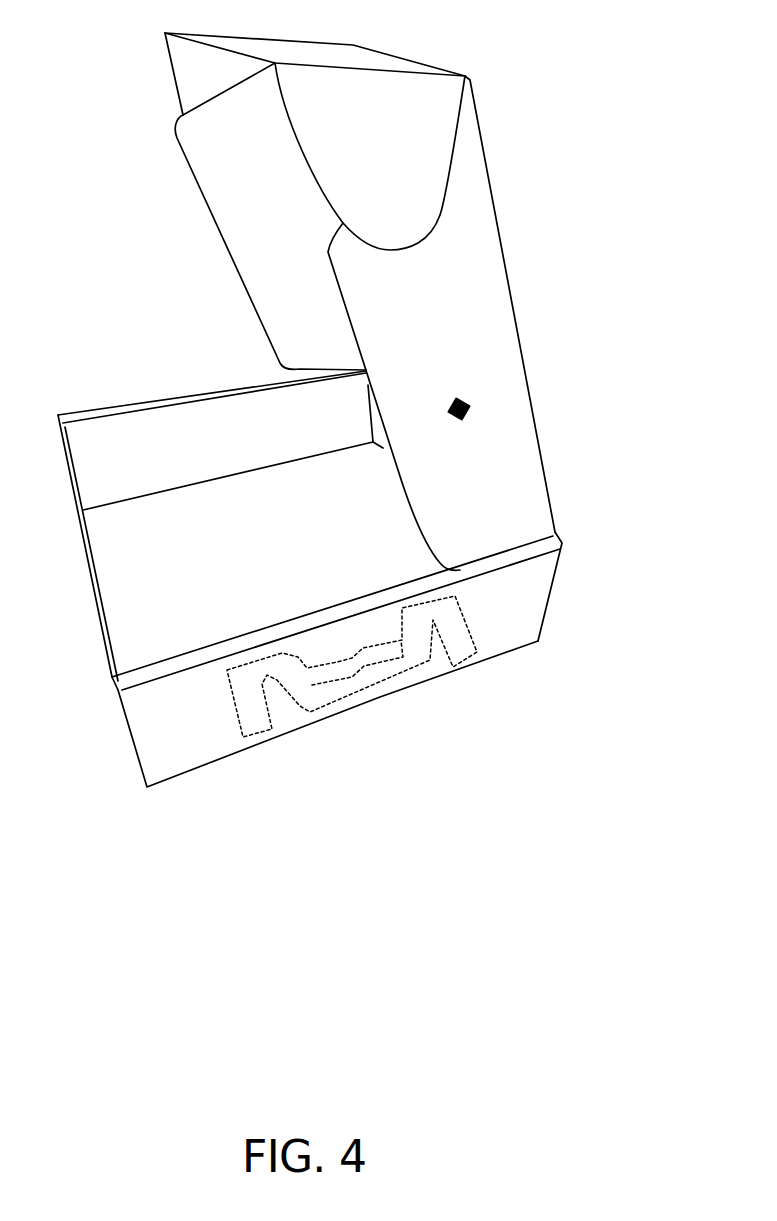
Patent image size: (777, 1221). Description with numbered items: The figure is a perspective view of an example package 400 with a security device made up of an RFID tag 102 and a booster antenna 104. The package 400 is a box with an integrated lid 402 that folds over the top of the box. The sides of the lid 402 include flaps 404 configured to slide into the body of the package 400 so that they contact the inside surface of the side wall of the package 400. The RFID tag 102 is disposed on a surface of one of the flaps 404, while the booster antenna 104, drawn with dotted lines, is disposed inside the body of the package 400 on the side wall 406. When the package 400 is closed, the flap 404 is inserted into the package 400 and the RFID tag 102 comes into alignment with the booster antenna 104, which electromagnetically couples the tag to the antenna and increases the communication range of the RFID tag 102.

The package 400 is at (328, 1118).
The integrated lid 402 is at (517, 317).
The flap 404 is at (495, 500).
The side wall 406 is at (517, 603).
The RFID tag 102 is at (460, 396).
The booster antenna 104 is at (235, 713).